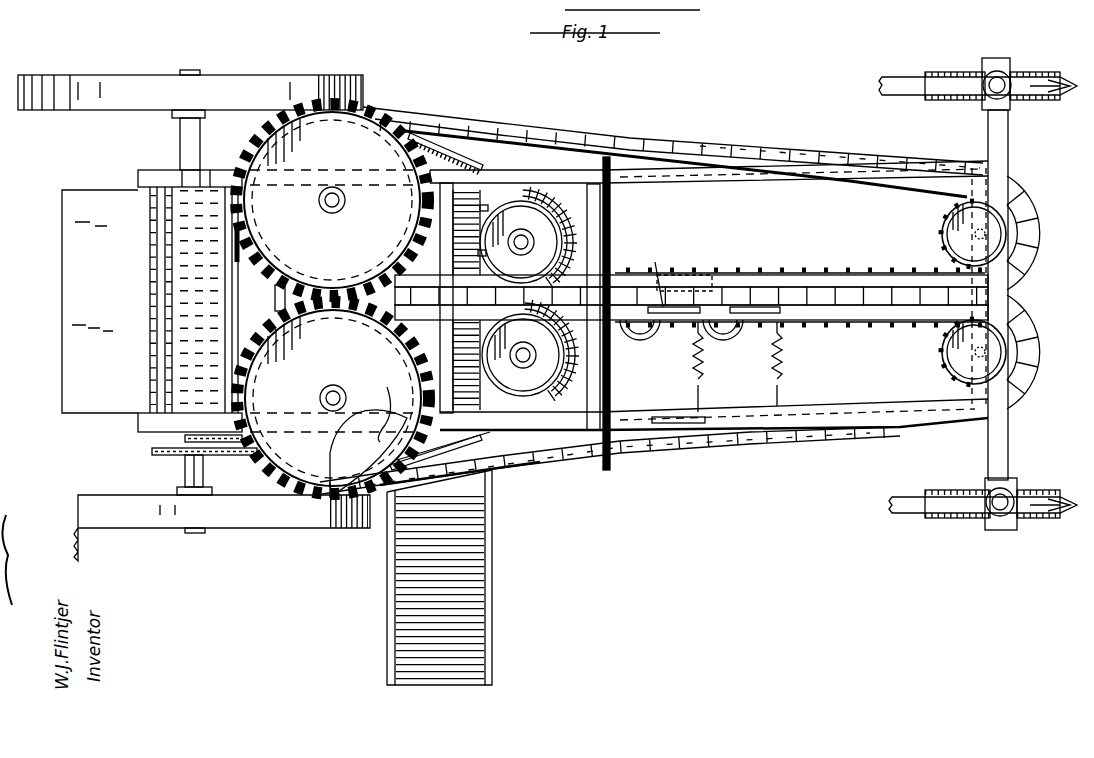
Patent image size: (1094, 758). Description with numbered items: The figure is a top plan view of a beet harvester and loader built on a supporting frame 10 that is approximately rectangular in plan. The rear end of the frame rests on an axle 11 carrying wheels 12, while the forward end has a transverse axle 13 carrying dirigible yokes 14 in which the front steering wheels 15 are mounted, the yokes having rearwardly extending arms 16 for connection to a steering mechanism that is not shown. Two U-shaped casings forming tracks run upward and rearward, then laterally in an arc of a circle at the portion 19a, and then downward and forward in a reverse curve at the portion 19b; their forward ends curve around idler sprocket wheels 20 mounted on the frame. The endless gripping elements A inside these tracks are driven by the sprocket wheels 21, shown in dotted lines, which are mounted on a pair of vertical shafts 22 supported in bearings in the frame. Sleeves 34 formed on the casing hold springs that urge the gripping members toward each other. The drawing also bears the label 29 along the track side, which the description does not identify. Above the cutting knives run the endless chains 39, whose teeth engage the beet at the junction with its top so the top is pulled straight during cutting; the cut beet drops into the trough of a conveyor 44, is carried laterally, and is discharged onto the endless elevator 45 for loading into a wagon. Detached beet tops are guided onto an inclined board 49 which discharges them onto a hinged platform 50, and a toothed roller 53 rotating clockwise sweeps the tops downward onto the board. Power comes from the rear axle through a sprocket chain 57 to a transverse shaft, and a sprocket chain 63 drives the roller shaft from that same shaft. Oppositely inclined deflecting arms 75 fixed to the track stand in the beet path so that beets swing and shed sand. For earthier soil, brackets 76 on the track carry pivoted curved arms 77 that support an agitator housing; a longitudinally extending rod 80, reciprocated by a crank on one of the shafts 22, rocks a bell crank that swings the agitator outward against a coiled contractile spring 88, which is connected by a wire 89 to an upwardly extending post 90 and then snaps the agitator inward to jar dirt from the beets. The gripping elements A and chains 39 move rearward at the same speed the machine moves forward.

The supporting frame 10 is at (680, 185).
The rear axle 11 is at (185, 477).
The wheels 12 is at (141, 82).
The transverse axle 13 is at (1008, 137).
The dirigible yokes 14 is at (1003, 60).
The front steering wheels 15 is at (975, 72).
The rearwardly extending arms 16 is at (905, 95).
The arcuate track portion 19a is at (266, 222).
The reverse-curve track portion 19b is at (713, 157).
The idler sprocket wheels 20 is at (942, 236).
The sprocket wheels 21 is at (368, 439).
The vertical shafts 22 is at (345, 200).
The conveyor side board 29 is at (530, 122).
The sleeves 34 is at (806, 270).
The endless chains 39 is at (469, 150).
The conveyor 44 is at (527, 237).
The endless elevator 45 is at (495, 583).
The inclined board 49 is at (276, 296).
The hinged platform 50 is at (62, 237).
The roller 53 is at (150, 245).
The sprocket chain 57 is at (229, 455).
The sprocket chain 63 is at (185, 438).
The deflecting arms 75 is at (690, 290).
The supports 76 is at (657, 275).
The curved arms 77 is at (650, 337).
The longitudinally extending rod 80 is at (495, 376).
The coiled contractile spring 88 is at (694, 358).
The wire 89 is at (698, 396).
The post 90 is at (700, 423).
The endless gripping elements A is at (633, 138).